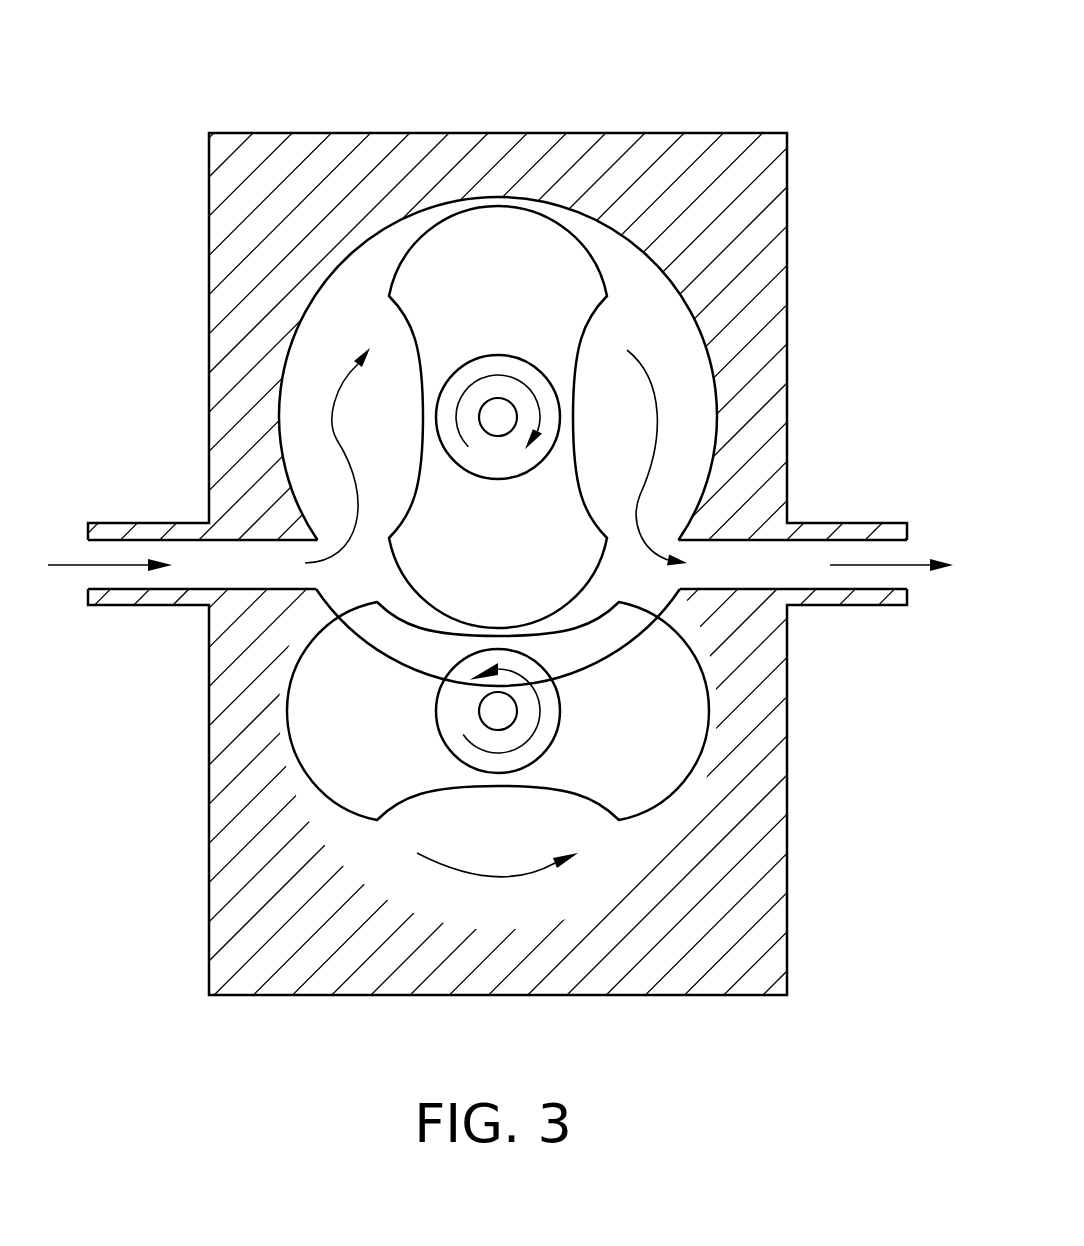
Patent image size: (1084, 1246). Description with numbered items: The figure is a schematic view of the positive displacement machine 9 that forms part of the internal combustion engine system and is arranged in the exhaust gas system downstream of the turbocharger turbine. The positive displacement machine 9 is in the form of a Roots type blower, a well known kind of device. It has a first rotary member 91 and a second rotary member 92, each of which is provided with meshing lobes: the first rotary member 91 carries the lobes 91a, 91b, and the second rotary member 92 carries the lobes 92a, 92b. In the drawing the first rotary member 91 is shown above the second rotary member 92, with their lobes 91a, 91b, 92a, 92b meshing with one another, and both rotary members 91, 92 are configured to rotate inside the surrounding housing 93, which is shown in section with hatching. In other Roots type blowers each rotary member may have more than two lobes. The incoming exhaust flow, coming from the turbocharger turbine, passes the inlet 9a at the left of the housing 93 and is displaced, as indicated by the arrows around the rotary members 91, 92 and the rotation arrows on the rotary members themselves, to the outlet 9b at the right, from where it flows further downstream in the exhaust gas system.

The positive displacement machine 9 is at (542, 623).
The housing 93 is at (358, 133).
The inlet 9a is at (71, 566).
The outlet 9b is at (912, 568).
The first rotary member 91 is at (363, 346).
The lobe 91a is at (505, 253).
The lobe 91b is at (495, 585).
The second rotary member 92 is at (504, 711).
The lobe 92a is at (332, 713).
The lobe 92b is at (663, 712).